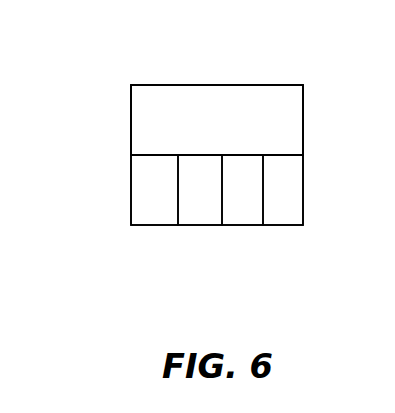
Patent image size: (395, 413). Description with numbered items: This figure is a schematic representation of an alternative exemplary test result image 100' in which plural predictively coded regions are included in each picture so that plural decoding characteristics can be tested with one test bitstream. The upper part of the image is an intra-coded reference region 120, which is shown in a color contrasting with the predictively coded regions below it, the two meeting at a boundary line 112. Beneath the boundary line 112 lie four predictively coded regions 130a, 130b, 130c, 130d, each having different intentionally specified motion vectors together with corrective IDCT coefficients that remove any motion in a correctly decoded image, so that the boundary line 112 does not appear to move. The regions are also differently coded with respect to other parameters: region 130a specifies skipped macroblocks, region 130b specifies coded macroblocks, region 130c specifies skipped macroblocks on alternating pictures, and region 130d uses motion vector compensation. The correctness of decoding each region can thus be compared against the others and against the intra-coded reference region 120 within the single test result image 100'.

The test result image 100' is at (257, 144).
The reference region 120 is at (138, 112).
The boundary line 112 is at (279, 156).
The predictively coded skipped macroblock region 130a is at (150, 218).
The predictively coded-macroblock region 130b is at (197, 218).
The predictively coded alternating skipped macroblock region 130c is at (240, 218).
The predictively coded region with motion vector compensation 130d is at (285, 225).